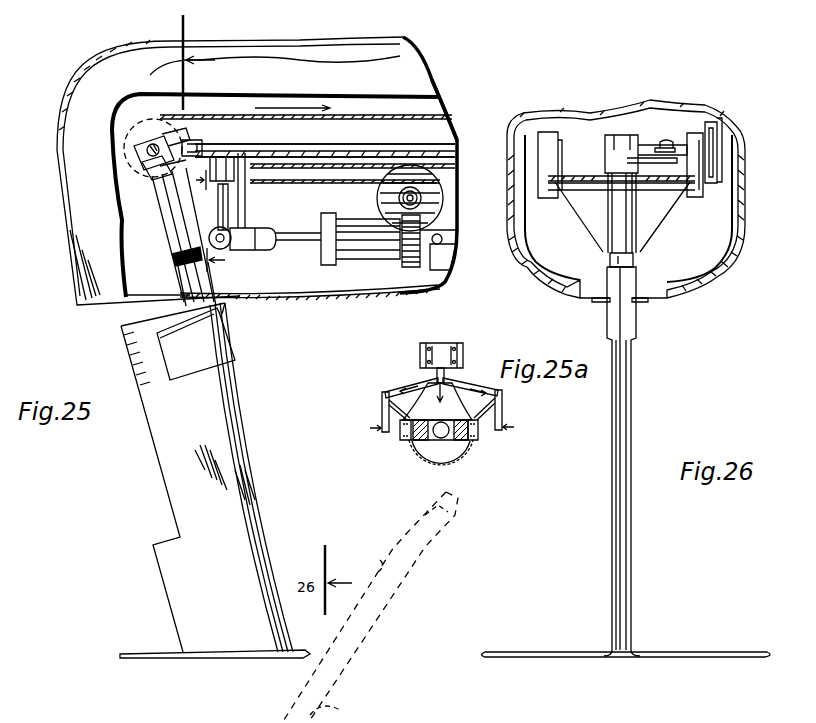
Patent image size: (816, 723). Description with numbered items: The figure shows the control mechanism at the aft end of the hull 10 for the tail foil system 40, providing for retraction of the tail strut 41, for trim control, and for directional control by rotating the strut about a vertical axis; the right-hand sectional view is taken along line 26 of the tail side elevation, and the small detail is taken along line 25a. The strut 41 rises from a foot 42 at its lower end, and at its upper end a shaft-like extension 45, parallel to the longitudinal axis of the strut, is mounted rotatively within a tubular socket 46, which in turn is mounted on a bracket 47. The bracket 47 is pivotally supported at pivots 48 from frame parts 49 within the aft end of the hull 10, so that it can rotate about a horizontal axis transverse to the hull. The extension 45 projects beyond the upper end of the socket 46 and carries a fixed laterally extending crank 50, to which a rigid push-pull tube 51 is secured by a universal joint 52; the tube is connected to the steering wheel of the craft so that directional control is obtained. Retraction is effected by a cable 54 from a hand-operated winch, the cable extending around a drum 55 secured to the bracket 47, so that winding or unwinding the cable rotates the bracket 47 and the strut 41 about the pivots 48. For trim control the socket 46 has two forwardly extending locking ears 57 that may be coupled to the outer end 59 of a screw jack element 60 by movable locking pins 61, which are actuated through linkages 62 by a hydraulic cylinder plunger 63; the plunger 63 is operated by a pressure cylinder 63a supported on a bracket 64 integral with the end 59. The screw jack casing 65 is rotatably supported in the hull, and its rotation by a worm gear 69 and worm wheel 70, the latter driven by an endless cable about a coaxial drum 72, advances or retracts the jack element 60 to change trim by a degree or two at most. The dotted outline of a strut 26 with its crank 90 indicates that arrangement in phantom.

In FIG. 26, the hull 10 is at (756, 231).
In FIG. 25, the strut 26 is at (180, 62).
In FIG. 25, the tail foil system 40 is at (225, 477).
In FIG. 26, the tail foil system 40 is at (595, 461).
In FIG. 25, the tail strut 41 is at (245, 550).
In FIG. 26, the tail strut 41 is at (622, 520).
In FIG. 25, the base plate 42 is at (185, 660).
In FIG. 26, the base plate 42 is at (535, 660).
In FIG. 25, the shaft-like extension 45 is at (183, 278).
In FIG. 26, the shaft-like extension 45 is at (634, 262).
In FIG. 25, the tubular socket 46 is at (172, 218).
In FIG. 26, the tubular socket 46 is at (628, 232).
In FIG. 25, the bracket 47 is at (160, 170).
In FIG. 26, the bracket 47 is at (582, 186).
In FIG. 25, the pivots 48 is at (152, 180).
In FIG. 26, the pivots 48 is at (562, 150).
In FIG. 26, the frame parts 49 is at (540, 200).
In FIG. 25, the crank 50 is at (152, 135).
In FIG. 26, the crank 50 is at (645, 148).
In FIG. 25, the push-pull tube 51 is at (334, 150).
In FIG. 25, the universal joint 52 is at (204, 146).
In FIG. 26, the universal joint 52 is at (666, 142).
In FIG. 25, the cable 54 is at (436, 114).
In FIG. 26, the cable 54 is at (720, 120).
In FIG. 25, the drum 55 is at (122, 146).
In FIG. 26, the drum 55 is at (719, 136).
In FIG. 25, the locking ears 57 is at (176, 240).
In FIG. 25A, the locking ears 57 is at (425, 412).
In FIG. 25, the outer end of screw jack element 59 is at (262, 250).
In FIG. 25A, the outer end of screw jack element 59 is at (478, 428).
In FIG. 25, the screw jack element 60 is at (307, 252).
In FIG. 25, the locking pins 61 is at (226, 246).
In FIG. 25A, the locking pins 61 is at (522, 450).
In FIG. 25, the linkages 62 is at (232, 204).
In FIG. 25A, the linkages 62 is at (378, 390).
In FIG. 25A, the hydraulic cylinder plunger 63 is at (434, 381).
In FIG. 25, the pressure cylinder 63a is at (234, 168).
In FIG. 25A, the pressure cylinder 63a is at (446, 343).
In FIG. 25, the bracket 64 is at (247, 190).
In FIG. 25A, the bracket 64 is at (460, 384).
In FIG. 25, the screw jack casing 65 is at (368, 259).
In FIG. 25A, the screw jack casing 65 is at (435, 445).
In FIG. 25, the worm gear 69 is at (440, 258).
In FIG. 25A, the worm gear 69 is at (456, 458).
In FIG. 25, the worm wheel 70 is at (421, 198).
In FIG. 25, the drum 72 is at (395, 184).
In FIG. 25, the crank 90 is at (357, 632).
In FIG. 25, the line 25a— 25a is at (209, 222).